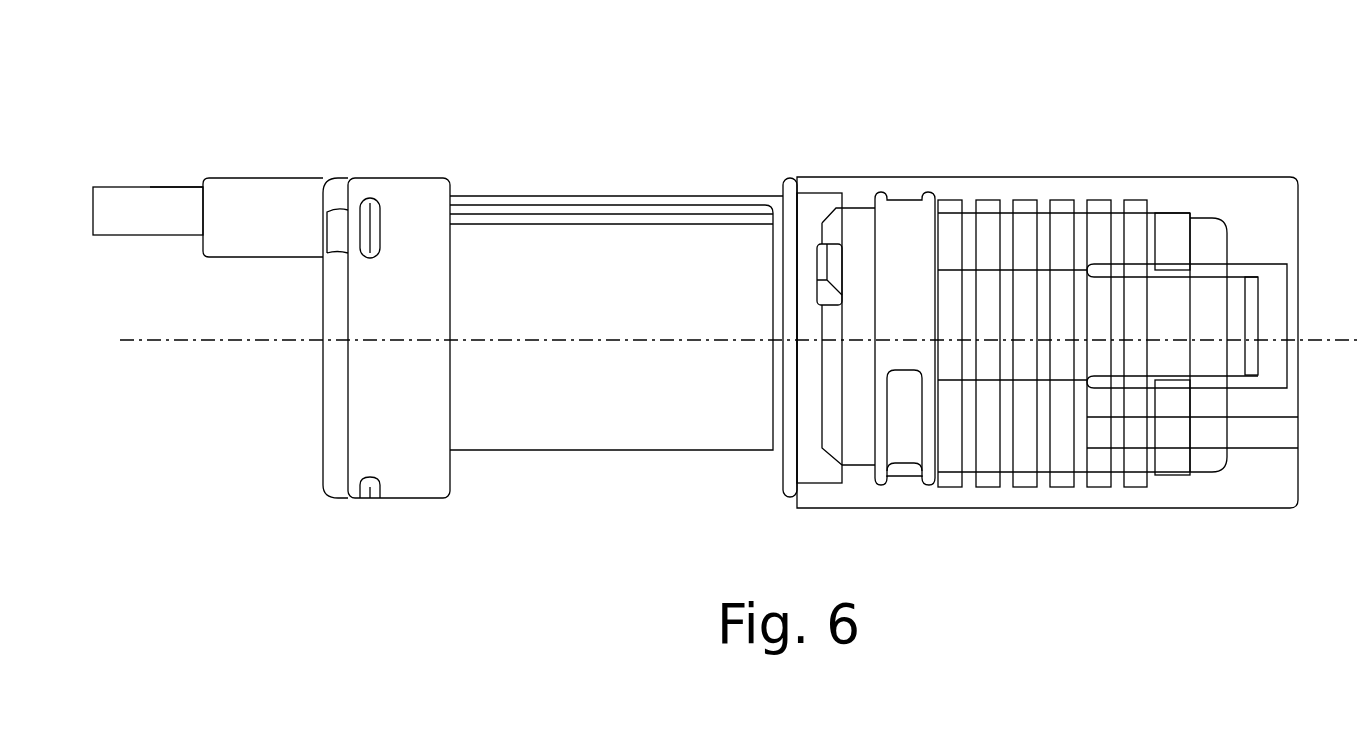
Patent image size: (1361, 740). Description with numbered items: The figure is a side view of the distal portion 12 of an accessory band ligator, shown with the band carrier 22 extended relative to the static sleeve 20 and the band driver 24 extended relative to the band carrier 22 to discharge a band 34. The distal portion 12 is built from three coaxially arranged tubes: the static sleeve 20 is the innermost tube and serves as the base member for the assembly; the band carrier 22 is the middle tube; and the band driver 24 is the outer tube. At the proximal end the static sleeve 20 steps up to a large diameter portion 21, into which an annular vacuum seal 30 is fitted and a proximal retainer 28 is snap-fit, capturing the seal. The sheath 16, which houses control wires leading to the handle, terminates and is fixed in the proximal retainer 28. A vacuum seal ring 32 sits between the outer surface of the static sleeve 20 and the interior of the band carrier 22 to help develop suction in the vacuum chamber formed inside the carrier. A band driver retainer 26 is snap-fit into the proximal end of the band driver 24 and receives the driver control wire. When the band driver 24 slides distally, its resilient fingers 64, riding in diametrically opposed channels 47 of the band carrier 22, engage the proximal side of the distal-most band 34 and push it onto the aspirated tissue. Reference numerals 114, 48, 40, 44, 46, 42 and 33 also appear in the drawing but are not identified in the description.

The distal portion 12 is at (840, 64).
The sheath 16 is at (118, 154).
The plug ferrule 114 is at (170, 187).
The proximal retainer 28 is at (262, 258).
The large diameter portion 21 is at (398, 180).
The annular vacuum seal 30 is at (365, 498).
The static sleeve 20 is at (540, 440).
The central axis 48 is at (248, 340).
The vacuum seal ring 32 is at (773, 456).
The band driver retainer 26 is at (820, 197).
The band driver 24 is at (905, 190).
The fins 40 is at (1040, 198).
The band 34 is at (1063, 484).
The end fin 44 is at (1150, 207).
The stop 46 is at (1170, 212).
The shoulder 42 is at (1192, 218).
The band carrier 22 is at (1220, 227).
The channels 47 is at (1197, 362).
The fingers 64 is at (1248, 312).
The channel 33 is at (1293, 429).